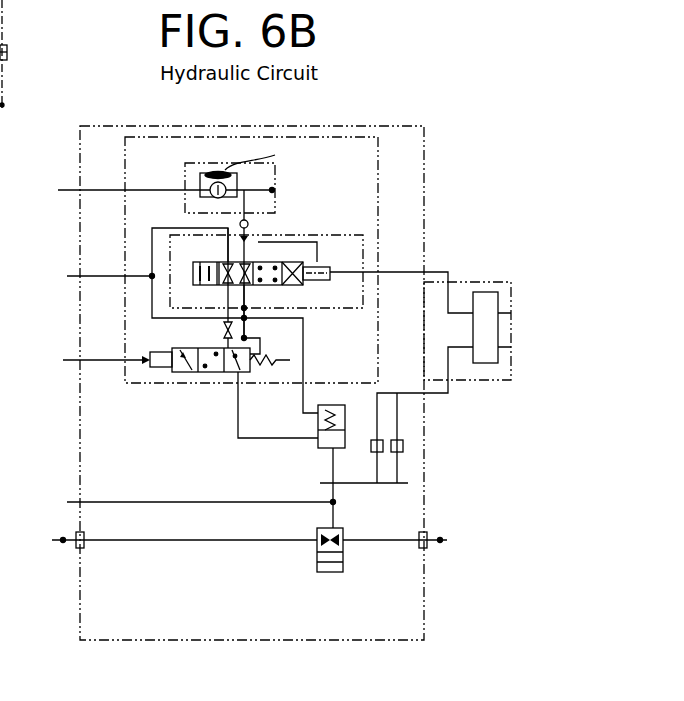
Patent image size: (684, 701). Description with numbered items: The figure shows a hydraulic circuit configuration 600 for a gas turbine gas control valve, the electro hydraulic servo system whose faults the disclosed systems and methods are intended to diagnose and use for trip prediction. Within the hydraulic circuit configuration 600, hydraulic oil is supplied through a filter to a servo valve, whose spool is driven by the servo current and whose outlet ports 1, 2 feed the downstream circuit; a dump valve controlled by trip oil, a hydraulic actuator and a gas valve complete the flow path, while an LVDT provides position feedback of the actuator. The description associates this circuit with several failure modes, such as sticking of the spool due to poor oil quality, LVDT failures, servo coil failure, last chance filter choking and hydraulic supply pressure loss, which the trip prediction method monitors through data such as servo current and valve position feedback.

The hydraulic circuit configuration 600 is at (124, 112).
The servo valve port 1 is at (222, 288).
The servo valve port 2 is at (251, 301).